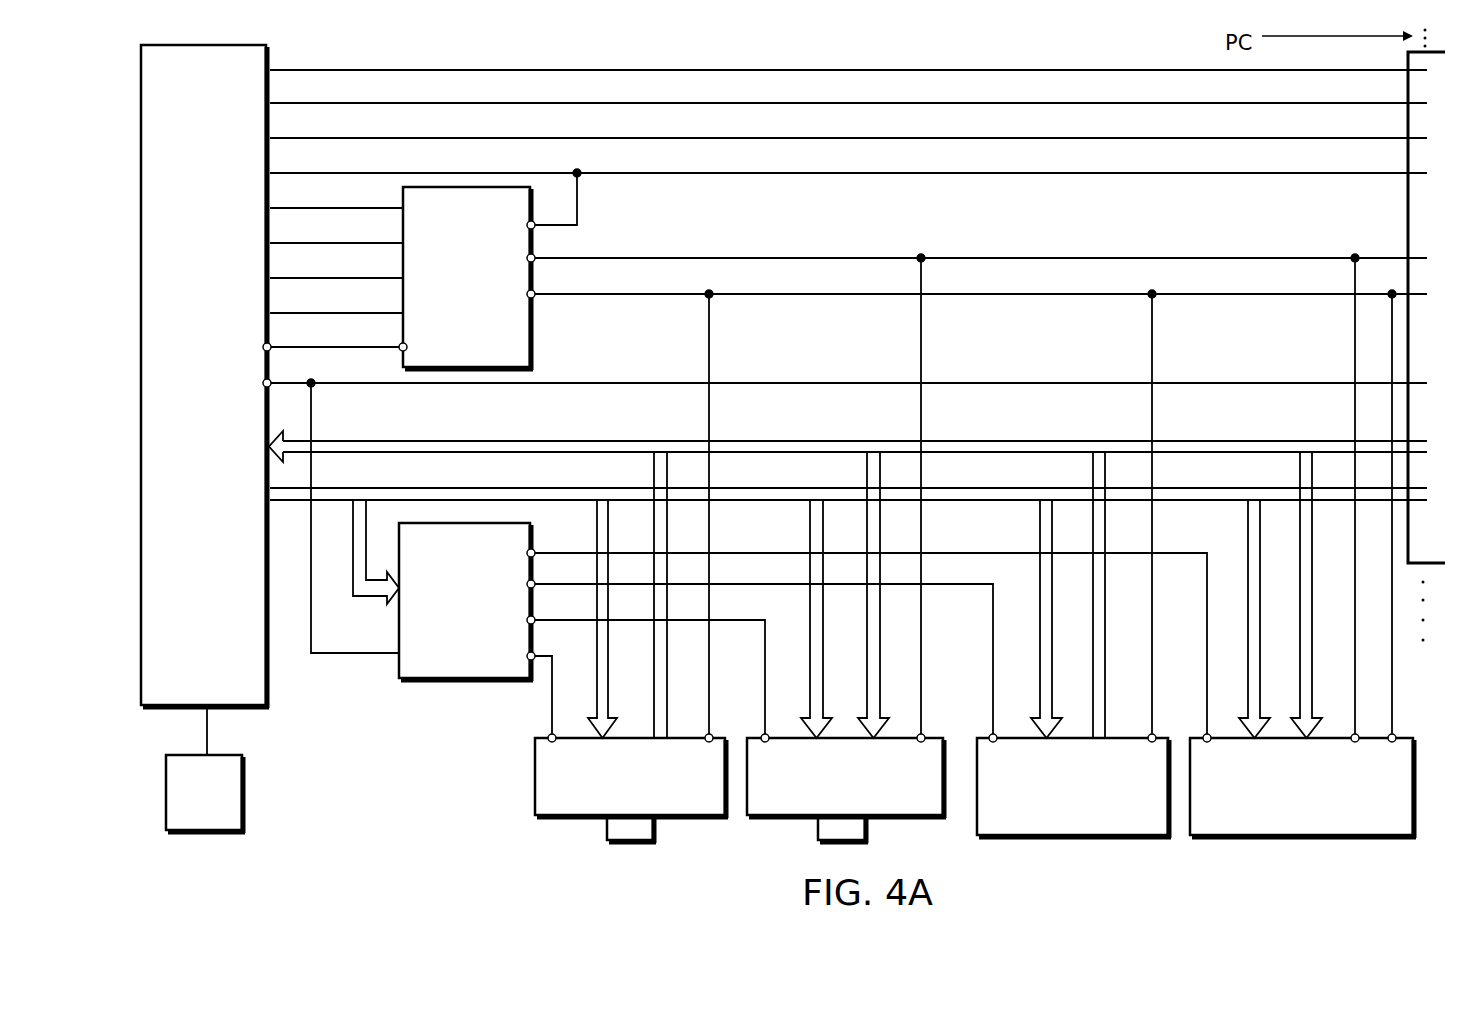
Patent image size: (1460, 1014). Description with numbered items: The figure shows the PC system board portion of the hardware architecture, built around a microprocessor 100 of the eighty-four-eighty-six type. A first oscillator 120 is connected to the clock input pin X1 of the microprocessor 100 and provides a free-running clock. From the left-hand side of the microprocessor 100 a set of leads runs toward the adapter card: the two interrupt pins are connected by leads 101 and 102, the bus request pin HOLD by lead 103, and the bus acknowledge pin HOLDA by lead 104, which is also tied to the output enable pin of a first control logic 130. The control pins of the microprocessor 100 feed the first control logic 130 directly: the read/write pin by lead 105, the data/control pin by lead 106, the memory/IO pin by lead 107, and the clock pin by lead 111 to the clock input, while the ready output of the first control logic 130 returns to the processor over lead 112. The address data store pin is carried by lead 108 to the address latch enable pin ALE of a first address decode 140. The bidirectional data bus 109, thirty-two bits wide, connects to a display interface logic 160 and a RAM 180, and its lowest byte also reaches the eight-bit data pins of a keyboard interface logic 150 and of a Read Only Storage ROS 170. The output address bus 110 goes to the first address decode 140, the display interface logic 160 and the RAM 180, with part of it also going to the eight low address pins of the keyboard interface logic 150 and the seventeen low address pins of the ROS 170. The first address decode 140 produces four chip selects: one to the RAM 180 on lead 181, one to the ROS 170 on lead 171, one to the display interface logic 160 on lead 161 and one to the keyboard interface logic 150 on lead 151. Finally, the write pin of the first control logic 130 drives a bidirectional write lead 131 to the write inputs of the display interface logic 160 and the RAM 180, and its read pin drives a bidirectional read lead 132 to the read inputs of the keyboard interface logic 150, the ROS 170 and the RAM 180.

The microprocessor 100 is at (271, 690).
The lead 101 is at (283, 71).
The lead 102 is at (283, 104).
The lead 103 is at (283, 139).
The lead 104 is at (283, 174).
The lead 105 is at (283, 209).
The lead 106 is at (283, 244).
The lead 107 is at (283, 279).
The lead 108 is at (340, 384).
The bidirectional data bus 109 is at (340, 441).
The output address bus 110 is at (340, 488).
The lead 111 is at (283, 314).
The lead 112 is at (283, 348).
The oscillator 1 120 is at (243, 797).
The control logic 1 130 is at (531, 335).
The bidirectional write lead 131 is at (633, 259).
The bidirectional read lead 132 is at (633, 295).
The address decode 1 140 is at (362, 655).
The keyboard interface logic 150 is at (724, 738).
The lead 151 is at (550, 714).
The display interface logic 160 is at (942, 738).
The lead 161 is at (736, 622).
The Read Only Storage ROS 170 is at (1167, 738).
The lead 171 is at (950, 586).
The RAM 180 is at (1412, 738).
The lead 181 is at (736, 553).